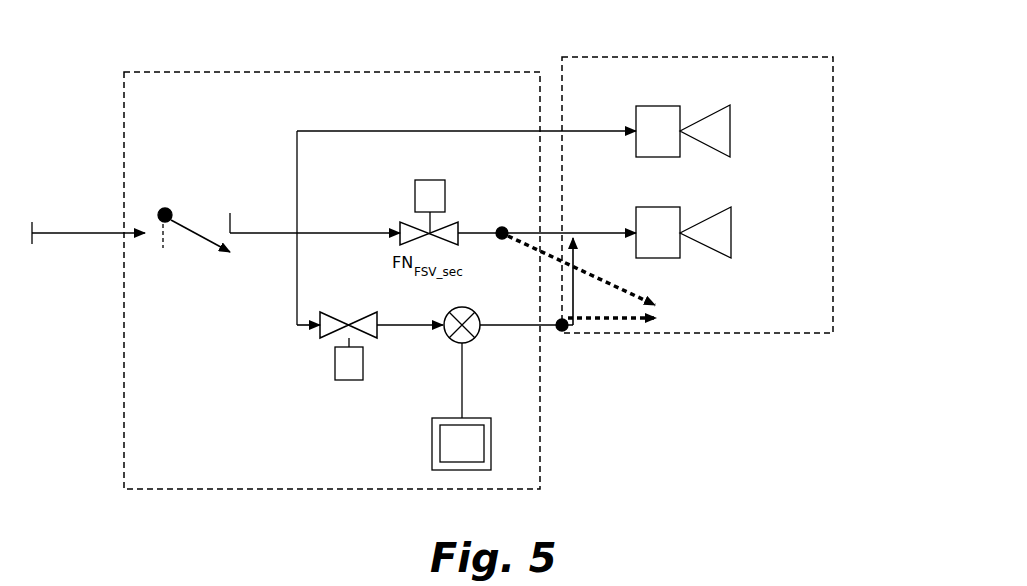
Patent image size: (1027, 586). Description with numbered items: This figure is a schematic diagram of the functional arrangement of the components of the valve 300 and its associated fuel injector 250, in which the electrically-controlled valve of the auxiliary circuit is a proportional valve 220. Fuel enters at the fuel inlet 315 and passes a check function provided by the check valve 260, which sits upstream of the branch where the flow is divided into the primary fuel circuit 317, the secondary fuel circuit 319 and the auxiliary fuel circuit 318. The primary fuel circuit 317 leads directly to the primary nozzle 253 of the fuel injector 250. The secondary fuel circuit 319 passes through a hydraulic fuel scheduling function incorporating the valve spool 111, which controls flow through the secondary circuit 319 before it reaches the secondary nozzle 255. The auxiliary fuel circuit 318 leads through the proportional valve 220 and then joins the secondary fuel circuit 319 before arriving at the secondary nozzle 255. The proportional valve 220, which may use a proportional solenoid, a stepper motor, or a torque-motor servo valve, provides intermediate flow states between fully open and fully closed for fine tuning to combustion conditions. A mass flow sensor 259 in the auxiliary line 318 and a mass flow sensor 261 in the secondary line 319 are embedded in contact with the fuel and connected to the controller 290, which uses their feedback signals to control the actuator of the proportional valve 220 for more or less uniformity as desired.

The valve 300 is at (156, 40).
The fuel injector 250 is at (755, 42).
The fuel inlet 315 is at (95, 240).
The check valve 260 is at (204, 298).
The primary fuel circuit 317 is at (430, 131).
The valve spool 111 is at (415, 194).
The secondary fuel circuit 319 is at (480, 233).
The mass flow sensor 261 is at (520, 205).
The primary nozzle 253 is at (735, 120).
The secondary nozzle 255 is at (735, 222).
The proportional valve 220 is at (448, 352).
The auxiliary fuel circuit 318 is at (528, 332).
The mass flow sensor 259 is at (603, 382).
The controller 290 is at (655, 279).